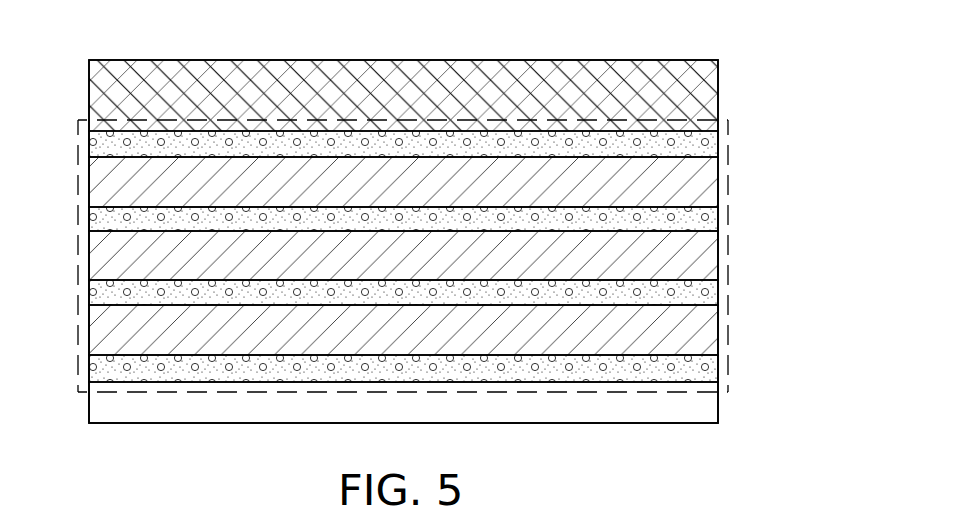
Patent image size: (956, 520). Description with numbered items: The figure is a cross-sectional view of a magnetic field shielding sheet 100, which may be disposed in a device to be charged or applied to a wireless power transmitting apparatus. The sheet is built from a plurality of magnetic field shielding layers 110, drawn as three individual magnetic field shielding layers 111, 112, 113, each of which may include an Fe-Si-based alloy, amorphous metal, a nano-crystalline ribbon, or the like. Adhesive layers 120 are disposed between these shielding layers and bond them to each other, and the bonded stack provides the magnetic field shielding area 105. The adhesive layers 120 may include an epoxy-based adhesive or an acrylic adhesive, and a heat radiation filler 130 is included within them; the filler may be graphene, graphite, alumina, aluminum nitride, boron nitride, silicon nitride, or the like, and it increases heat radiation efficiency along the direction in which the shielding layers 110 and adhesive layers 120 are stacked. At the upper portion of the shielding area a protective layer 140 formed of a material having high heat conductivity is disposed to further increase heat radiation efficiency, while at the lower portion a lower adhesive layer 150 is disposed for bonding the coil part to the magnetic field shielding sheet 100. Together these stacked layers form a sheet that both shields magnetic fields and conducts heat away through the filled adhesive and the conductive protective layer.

The magnetic field shielding sheet 100 is at (575, 18).
The magnetic field shielding area 105 is at (107, 392).
The plurality of magnetic field shielding layers 110 is at (469, 269).
The magnetic field shielding layer 111 is at (437, 330).
The magnetic field shielding layer 112 is at (713, 258).
The magnetic field shielding layer 113 is at (713, 186).
The adhesive layer 120 is at (93, 145).
The heat radiation filler 130 is at (713, 149).
The protective layer 140 is at (713, 91).
The lower adhesive layer 150 is at (713, 408).